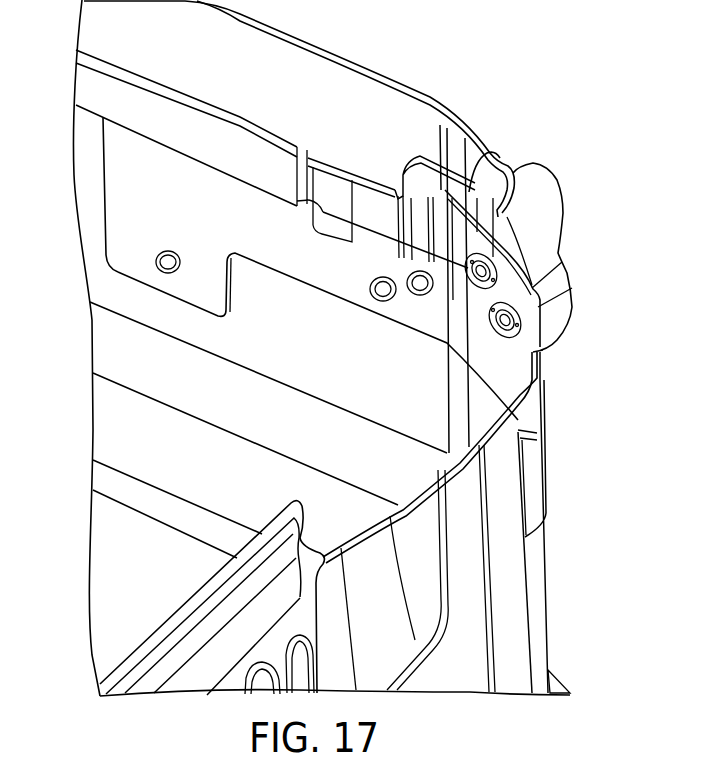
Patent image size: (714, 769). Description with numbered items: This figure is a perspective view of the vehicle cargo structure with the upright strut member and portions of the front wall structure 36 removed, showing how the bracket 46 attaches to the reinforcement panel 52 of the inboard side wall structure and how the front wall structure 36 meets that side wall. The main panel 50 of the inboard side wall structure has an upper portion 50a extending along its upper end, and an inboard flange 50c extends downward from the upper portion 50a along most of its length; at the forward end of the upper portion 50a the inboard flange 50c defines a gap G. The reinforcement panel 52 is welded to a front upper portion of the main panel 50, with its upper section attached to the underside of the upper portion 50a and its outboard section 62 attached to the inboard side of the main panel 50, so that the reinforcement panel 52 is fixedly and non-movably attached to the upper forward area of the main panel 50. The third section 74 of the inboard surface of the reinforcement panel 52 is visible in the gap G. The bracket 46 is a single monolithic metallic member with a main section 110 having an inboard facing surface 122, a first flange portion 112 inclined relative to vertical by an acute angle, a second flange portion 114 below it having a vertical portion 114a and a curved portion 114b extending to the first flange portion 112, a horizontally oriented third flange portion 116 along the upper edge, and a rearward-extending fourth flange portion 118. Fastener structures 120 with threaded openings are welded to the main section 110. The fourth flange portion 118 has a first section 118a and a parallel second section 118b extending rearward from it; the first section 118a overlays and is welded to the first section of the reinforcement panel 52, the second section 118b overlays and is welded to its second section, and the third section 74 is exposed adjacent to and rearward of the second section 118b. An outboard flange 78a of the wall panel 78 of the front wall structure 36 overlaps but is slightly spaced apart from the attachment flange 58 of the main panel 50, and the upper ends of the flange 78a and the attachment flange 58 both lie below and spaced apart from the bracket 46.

The front wall structure 36 is at (190, 595).
The bracket 46 is at (494, 272).
The main panel 50 is at (133, 430).
The upper portion 50a is at (290, 77).
The inboard flange 50c is at (249, 168).
The reinforcement panel 52 is at (101, 173).
The attachment flange 58 is at (530, 414).
The outboard section 62 is at (130, 232).
The third section 74 is at (311, 196).
The wall panel 78 is at (188, 647).
The outboard flange 78a is at (507, 580).
The main section 110 is at (463, 283).
The first flange portion 112 is at (540, 222).
The second flange portion 114 is at (599, 299).
The vertical portion 114a is at (555, 320).
The curved portion 114b is at (555, 278).
The third flange portion 116 is at (497, 154).
The fourth flange portion 118 is at (373, 212).
The first section 118a is at (387, 198).
The second section 118b is at (340, 190).
The fastener structures 120 is at (496, 336).
The inboard facing surface 122 is at (450, 187).
The gap G is at (312, 173).